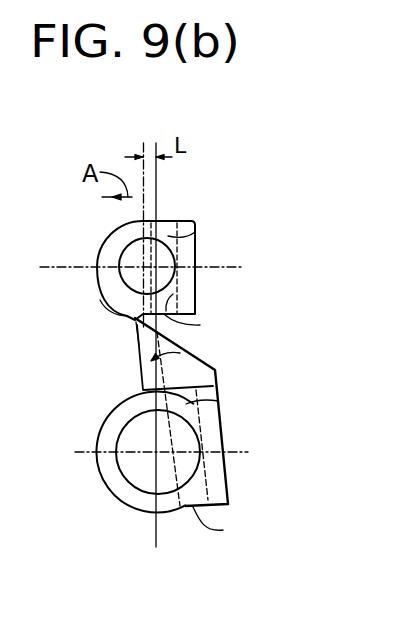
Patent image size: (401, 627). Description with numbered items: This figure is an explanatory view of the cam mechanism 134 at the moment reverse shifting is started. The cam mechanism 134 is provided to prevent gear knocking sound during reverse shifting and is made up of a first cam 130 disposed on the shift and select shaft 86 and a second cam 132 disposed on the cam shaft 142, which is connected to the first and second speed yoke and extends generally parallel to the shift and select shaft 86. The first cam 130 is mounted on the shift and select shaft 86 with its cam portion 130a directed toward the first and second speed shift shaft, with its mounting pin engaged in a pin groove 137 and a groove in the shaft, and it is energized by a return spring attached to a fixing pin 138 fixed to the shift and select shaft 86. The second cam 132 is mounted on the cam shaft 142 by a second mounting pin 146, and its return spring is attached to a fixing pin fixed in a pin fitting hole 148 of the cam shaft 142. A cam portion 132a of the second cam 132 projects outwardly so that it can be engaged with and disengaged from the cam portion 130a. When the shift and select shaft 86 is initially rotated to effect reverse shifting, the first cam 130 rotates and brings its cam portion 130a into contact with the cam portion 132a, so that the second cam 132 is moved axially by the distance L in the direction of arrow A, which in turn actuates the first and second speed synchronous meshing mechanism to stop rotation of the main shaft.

The shift and select shaft 86 is at (148, 466).
The first cam 130 is at (97, 472).
The cam portion 130a is at (137, 330).
The second cam 132 is at (103, 240).
The cam portion 132a is at (122, 317).
The cam mechanism 134 is at (227, 165).
The pin groove 137 is at (223, 530).
The fixing pin 138 is at (218, 401).
The cam shaft 142 is at (130, 262).
The second mounting pin 146 is at (195, 232).
The pin fitting hole 148 is at (200, 325).